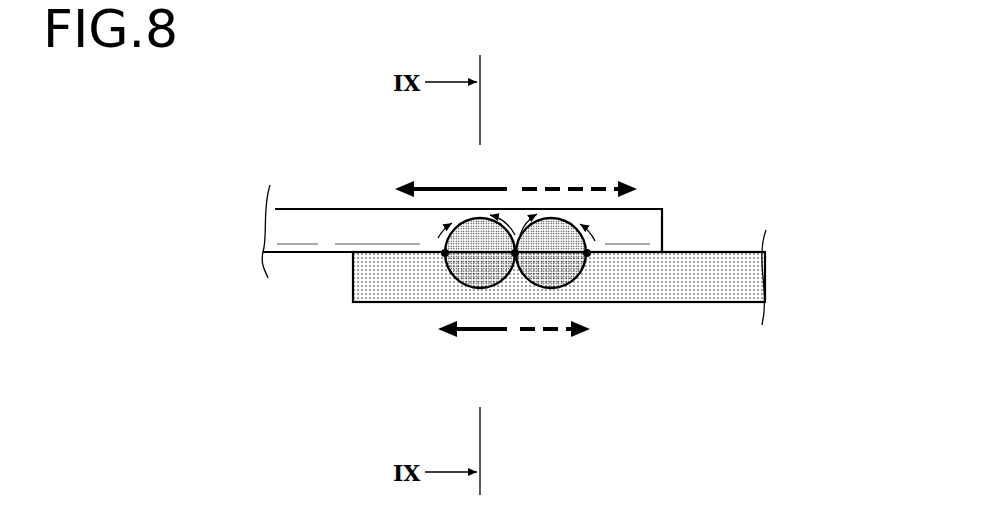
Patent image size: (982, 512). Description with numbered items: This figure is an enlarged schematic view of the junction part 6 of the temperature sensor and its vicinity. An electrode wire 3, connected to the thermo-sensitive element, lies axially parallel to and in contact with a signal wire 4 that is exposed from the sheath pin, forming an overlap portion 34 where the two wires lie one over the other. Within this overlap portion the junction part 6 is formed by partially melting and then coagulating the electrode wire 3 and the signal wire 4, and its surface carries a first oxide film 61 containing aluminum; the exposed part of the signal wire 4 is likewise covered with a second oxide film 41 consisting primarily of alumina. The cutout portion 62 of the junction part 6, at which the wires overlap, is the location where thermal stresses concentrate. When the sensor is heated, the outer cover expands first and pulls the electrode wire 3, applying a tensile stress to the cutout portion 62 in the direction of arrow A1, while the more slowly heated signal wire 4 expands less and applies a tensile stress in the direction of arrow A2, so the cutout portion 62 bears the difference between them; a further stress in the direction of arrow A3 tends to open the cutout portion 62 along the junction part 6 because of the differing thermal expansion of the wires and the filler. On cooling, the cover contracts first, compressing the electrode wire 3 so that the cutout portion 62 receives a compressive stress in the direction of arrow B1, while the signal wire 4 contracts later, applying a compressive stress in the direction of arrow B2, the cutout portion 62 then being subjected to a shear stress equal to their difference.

The electrode wire 3 is at (315, 209).
The signal wire 4 is at (732, 305).
The second oxide film 41 is at (698, 297).
The overlap portion 34 is at (593, 312).
The junction part 6 is at (532, 291).
The first oxide film 61 is at (553, 238).
The cutout portion 62 is at (515, 248).
The arrow A1 is at (430, 189).
The arrow A2 is at (478, 333).
The arrow A3 is at (440, 238).
The arrow B1 is at (575, 189).
The arrow B2 is at (557, 332).